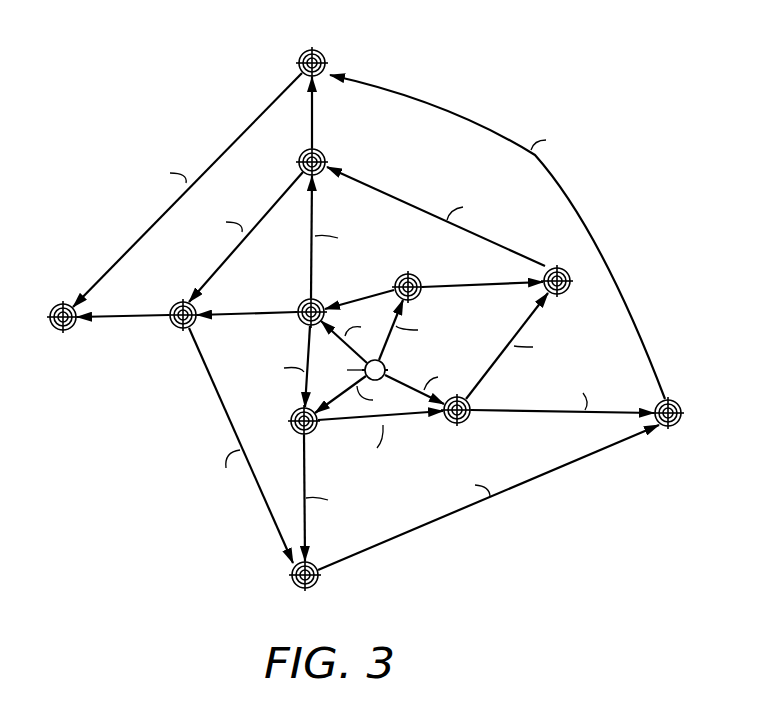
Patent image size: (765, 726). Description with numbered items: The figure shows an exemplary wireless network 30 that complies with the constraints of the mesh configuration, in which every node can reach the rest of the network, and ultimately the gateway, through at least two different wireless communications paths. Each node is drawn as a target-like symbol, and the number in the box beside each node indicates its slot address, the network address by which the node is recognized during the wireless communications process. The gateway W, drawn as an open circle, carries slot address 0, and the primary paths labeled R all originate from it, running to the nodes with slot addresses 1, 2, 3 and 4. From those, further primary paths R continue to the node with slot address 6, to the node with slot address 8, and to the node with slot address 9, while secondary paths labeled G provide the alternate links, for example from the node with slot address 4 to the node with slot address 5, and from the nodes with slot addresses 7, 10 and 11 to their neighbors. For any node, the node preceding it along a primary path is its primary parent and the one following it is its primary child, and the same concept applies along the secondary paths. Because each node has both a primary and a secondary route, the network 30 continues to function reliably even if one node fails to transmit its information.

The network 30 is at (635, 73).
The slot address of the gateway node 0 is at (392, 364).
The slot address of node 1 is at (425, 292).
The slot address of node 2 is at (319, 298).
The slot address of node 3 is at (286, 419).
The slot address of node 4 is at (471, 421).
The slot address of node 5 is at (532, 289).
The slot address of node 6 is at (320, 149).
The slot address of node 7 is at (172, 327).
The slot address of node 8 is at (319, 586).
The slot address of node 9 is at (678, 425).
The slot address of node 10 is at (327, 56).
The slot address of node 11 is at (62, 333).